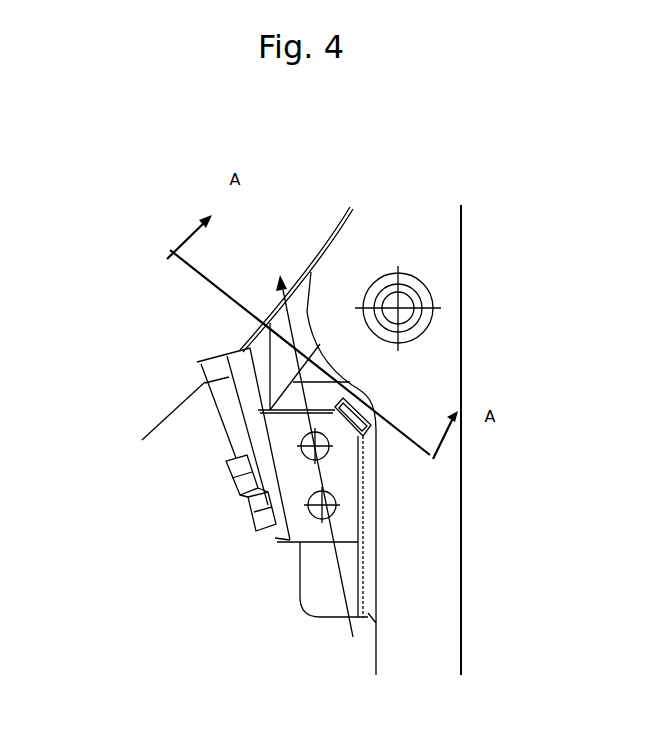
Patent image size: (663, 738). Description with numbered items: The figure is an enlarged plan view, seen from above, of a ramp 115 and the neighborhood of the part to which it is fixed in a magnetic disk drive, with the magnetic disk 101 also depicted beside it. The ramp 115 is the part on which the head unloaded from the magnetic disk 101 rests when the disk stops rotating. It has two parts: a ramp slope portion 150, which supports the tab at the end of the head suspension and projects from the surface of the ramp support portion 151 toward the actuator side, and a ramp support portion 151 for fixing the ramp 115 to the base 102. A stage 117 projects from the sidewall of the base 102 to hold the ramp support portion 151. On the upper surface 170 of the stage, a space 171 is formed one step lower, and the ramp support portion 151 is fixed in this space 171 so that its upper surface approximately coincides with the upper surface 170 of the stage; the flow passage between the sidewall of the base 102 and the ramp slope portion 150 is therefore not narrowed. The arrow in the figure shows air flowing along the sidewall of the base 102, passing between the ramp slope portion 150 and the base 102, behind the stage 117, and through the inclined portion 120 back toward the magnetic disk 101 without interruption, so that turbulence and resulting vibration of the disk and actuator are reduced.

The magnetic disk 101 is at (163, 252).
The base 102 is at (455, 602).
The ramp 115 is at (231, 531).
The stage 117 is at (298, 597).
The inclined portion 120 is at (305, 323).
The ramp slope portion 150 is at (240, 495).
The ramp support portion 151 is at (307, 533).
The upper surface of the stage 170 is at (370, 617).
The space 171 is at (321, 612).